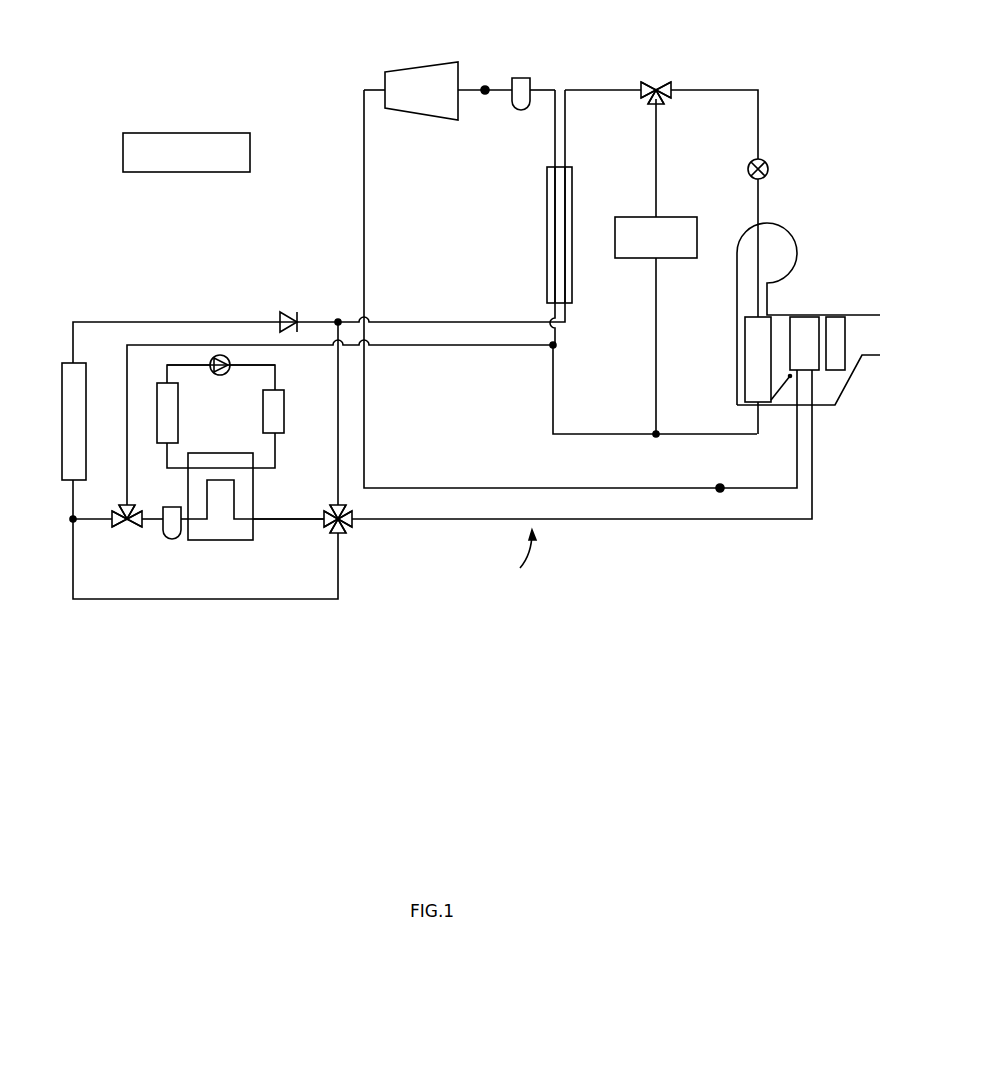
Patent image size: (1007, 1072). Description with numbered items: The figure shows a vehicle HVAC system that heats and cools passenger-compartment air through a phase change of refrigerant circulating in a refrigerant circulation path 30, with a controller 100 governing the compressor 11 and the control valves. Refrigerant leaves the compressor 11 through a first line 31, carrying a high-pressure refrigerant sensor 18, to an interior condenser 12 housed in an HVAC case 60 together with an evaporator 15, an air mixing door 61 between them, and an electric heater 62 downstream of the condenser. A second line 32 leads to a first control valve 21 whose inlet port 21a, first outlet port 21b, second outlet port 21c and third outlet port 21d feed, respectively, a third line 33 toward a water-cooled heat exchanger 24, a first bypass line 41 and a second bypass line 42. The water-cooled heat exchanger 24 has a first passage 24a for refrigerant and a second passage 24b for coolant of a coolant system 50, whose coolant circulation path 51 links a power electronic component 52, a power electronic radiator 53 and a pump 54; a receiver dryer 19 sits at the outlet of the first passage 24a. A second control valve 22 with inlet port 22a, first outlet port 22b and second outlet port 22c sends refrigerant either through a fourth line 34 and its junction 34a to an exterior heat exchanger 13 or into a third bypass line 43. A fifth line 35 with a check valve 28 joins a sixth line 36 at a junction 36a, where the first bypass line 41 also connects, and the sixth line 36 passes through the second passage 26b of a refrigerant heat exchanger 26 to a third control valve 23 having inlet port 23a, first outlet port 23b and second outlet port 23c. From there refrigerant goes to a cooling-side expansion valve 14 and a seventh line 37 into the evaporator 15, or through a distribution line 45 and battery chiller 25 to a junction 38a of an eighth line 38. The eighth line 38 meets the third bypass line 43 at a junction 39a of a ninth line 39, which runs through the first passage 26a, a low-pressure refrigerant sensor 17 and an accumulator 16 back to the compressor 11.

The controller 100 is at (252, 152).
The compressor 11 is at (422, 68).
The interior condenser 12 is at (806, 315).
The exterior heat exchanger 13 is at (61, 420).
The cooling-side expansion valve 14 is at (768, 169).
The evaporator 15 is at (745, 356).
The accumulator 16 is at (521, 78).
The low-pressure refrigerant sensor 17 is at (486, 86).
The high-pressure refrigerant sensor 18 is at (720, 484).
The receiver dryer 19 is at (171, 540).
The first control valve 21 is at (390, 564).
The inlet port 21a is at (350, 527).
The first outlet port 21b is at (324, 534).
The second outlet port 21c is at (345, 504).
The third outlet port 21d is at (342, 535).
The second control valve 22 is at (127, 530).
The inlet port 22a is at (130, 528).
The first outlet port 22b is at (122, 526).
The second outlet port 22c is at (125, 505).
The third control valve 23 is at (653, 76).
The inlet port 23a is at (646, 84).
The first outlet port 23b is at (666, 84).
The second outlet port 23c is at (660, 102).
The water-cooled heat exchanger 24 is at (221, 540).
The first passage 24a is at (240, 519).
The second passage 24b is at (243, 468).
The battery chiller 25 is at (630, 217).
The refrigerant heat exchanger 26 is at (547, 236).
The first passage 26a is at (554, 276).
The second passage 26b is at (572, 276).
The check valve 28 is at (292, 312).
The refrigerant circulation path 30 is at (520, 558).
The first line 31 is at (366, 428).
The second line 32 is at (581, 521).
The third line 33 is at (266, 522).
The fourth line 34 is at (89, 516).
The junction 34a is at (72, 519).
The fifth line 35 is at (174, 322).
The sixth line 36 is at (452, 322).
The junction 36a is at (339, 320).
The seventh line 37 is at (760, 205).
The eighth line 38 is at (600, 436).
The junction 38a is at (656, 437).
The ninth line 39 is at (555, 148).
The junction 39a is at (557, 345).
The first bypass line 41 is at (338, 440).
The second bypass line 42 is at (245, 600).
The third bypass line 43 is at (217, 344).
The distribution line 45 is at (658, 160).
The coolant system 50 is at (282, 379).
The coolant circulation path 51 is at (243, 366).
The power electronic component 52 is at (284, 410).
The power electronic radiator 53 is at (178, 430).
The pump 54 is at (221, 375).
The HVAC case 60 is at (861, 314).
The air mixing door 61 is at (777, 400).
The electric heater 62 is at (845, 335).